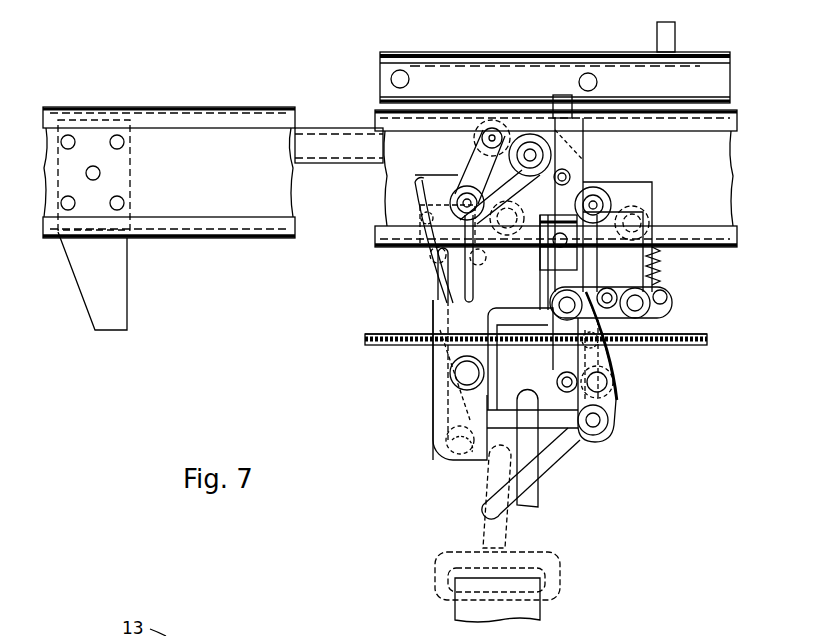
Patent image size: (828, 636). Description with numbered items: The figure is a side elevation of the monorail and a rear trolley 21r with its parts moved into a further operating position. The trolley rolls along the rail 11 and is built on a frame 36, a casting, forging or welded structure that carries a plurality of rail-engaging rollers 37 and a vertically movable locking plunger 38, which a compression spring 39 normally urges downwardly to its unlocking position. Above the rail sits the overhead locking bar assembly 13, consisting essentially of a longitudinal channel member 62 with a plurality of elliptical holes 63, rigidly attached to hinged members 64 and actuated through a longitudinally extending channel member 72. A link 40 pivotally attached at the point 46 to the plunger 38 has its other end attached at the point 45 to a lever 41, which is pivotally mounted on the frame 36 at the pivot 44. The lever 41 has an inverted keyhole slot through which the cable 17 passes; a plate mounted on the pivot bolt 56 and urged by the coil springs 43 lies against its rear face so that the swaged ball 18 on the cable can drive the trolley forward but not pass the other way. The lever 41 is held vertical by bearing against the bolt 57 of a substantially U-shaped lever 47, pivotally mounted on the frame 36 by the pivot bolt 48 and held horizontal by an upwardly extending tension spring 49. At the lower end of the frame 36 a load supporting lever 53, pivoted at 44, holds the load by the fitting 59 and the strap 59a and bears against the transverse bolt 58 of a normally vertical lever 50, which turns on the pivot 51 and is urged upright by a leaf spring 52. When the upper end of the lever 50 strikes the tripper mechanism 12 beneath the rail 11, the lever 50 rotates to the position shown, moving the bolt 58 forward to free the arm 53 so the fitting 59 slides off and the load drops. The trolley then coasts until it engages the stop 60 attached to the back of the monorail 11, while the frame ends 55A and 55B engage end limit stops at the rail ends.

The rail 11 is at (105, 106).
The limit abutment or stop 60 is at (130, 158).
The longitudinally extending channel member 72 is at (335, 128).
The overhead locking bar assembly 13 is at (441, 47).
The elliptical holes 63 is at (391, 80).
The hinged members 64 is at (675, 38).
The longitudinal channel member 62 is at (705, 90).
The locking plunger 38 is at (553, 96).
The frame 36 is at (588, 159).
The rail-engaging rollers 37 is at (474, 141).
The compression spring 39 is at (548, 212).
The end of trolley frame 55A is at (412, 212).
The end of trolley frame 55B is at (660, 222).
The link 40 is at (548, 258).
The pivot point 46 is at (580, 245).
The tripper mechanism 12 is at (440, 262).
The tension spring 49 is at (660, 280).
The U-shaped lever 47 is at (672, 309).
The bolt 57 is at (552, 303).
The pivot bolt 48 is at (640, 318).
The cable 17 is at (705, 347).
The rear trolley 21r is at (428, 352).
The lever 50 is at (444, 318).
The leaf spring 52 is at (433, 383).
The pivot 51 is at (480, 378).
The pivot point 45 is at (557, 382).
The ball 18 is at (600, 346).
The pivot 44 is at (608, 435).
The pivot bolt 56 is at (610, 390).
The lever 41 is at (612, 375).
The coil springs 43 is at (612, 392).
The transverse bolt 58 is at (440, 415).
The load supporting lever 53 is at (553, 440).
The fitting 59 is at (540, 497).
The strap 59a is at (540, 612).